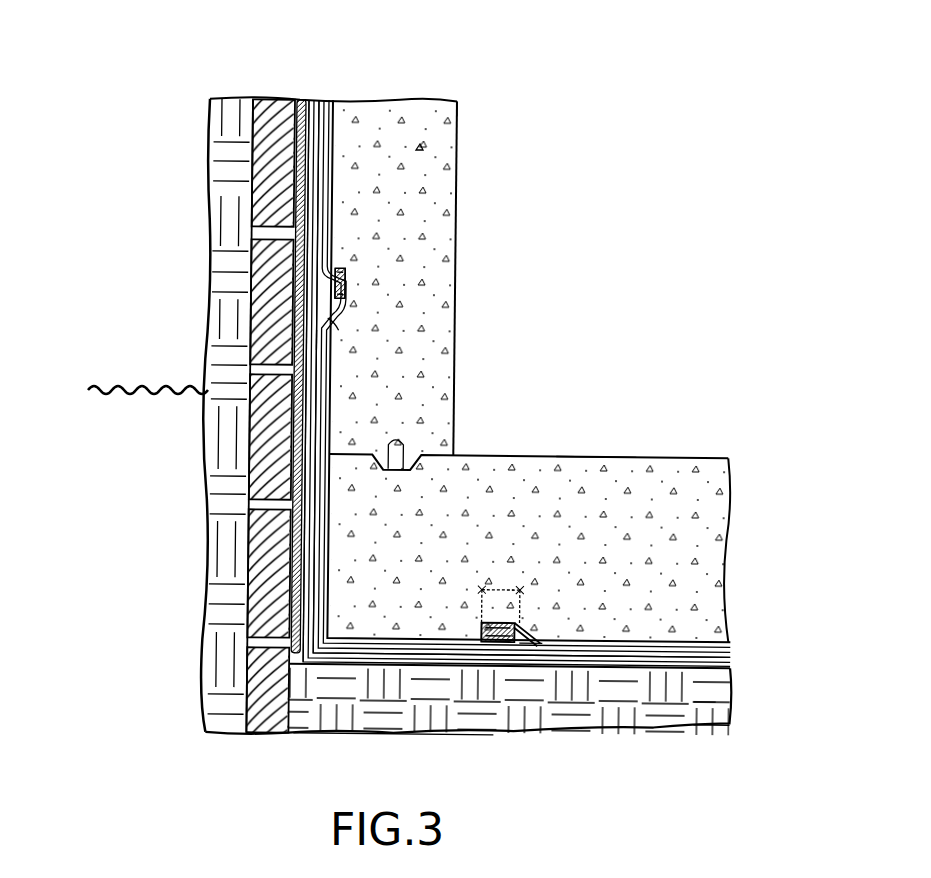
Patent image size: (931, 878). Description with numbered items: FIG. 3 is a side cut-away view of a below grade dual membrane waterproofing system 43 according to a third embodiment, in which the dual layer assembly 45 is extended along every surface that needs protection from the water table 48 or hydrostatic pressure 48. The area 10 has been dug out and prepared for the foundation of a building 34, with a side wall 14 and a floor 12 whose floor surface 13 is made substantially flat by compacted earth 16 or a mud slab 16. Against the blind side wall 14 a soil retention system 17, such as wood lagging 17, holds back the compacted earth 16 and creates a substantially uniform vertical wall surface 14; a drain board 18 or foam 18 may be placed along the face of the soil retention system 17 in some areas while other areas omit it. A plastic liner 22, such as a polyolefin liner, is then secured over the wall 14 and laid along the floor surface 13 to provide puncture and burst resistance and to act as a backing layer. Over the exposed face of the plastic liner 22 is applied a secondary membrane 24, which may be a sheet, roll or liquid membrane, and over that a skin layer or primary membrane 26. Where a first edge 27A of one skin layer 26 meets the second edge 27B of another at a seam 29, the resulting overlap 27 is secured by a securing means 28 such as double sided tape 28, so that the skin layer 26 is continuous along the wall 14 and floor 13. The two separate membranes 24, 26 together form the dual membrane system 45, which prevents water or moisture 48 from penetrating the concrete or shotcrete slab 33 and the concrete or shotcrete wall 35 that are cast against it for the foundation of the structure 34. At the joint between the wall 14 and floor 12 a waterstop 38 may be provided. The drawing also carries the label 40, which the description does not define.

The area 10 is at (245, 772).
The floor 12 is at (720, 698).
The floor surface 13 is at (715, 723).
The wall 14 is at (212, 215).
The compacted earth 16 is at (212, 440).
The soil retention system 17 is at (273, 150).
The drain board 18 is at (304, 100).
The plastic liner 22 is at (338, 272).
The secondary membrane 24 is at (320, 342).
The skin layer 26 is at (328, 200).
The overlap 27 is at (345, 268).
The first edge 27A is at (340, 290).
The second edge 27B is at (350, 300).
The securing means 28 is at (350, 290).
The seam 29 is at (333, 314).
The concrete slab 33 is at (665, 490).
The building 34 is at (378, 103).
The concrete or shotcrete wall 35 is at (418, 152).
The waterstop 38 is at (402, 448).
The concrete surface 40 is at (458, 115).
The below grade dual membrane waterproofing system 43 is at (603, 80).
The dual membrane system 45 is at (313, 100).
The water table 48 is at (160, 393).